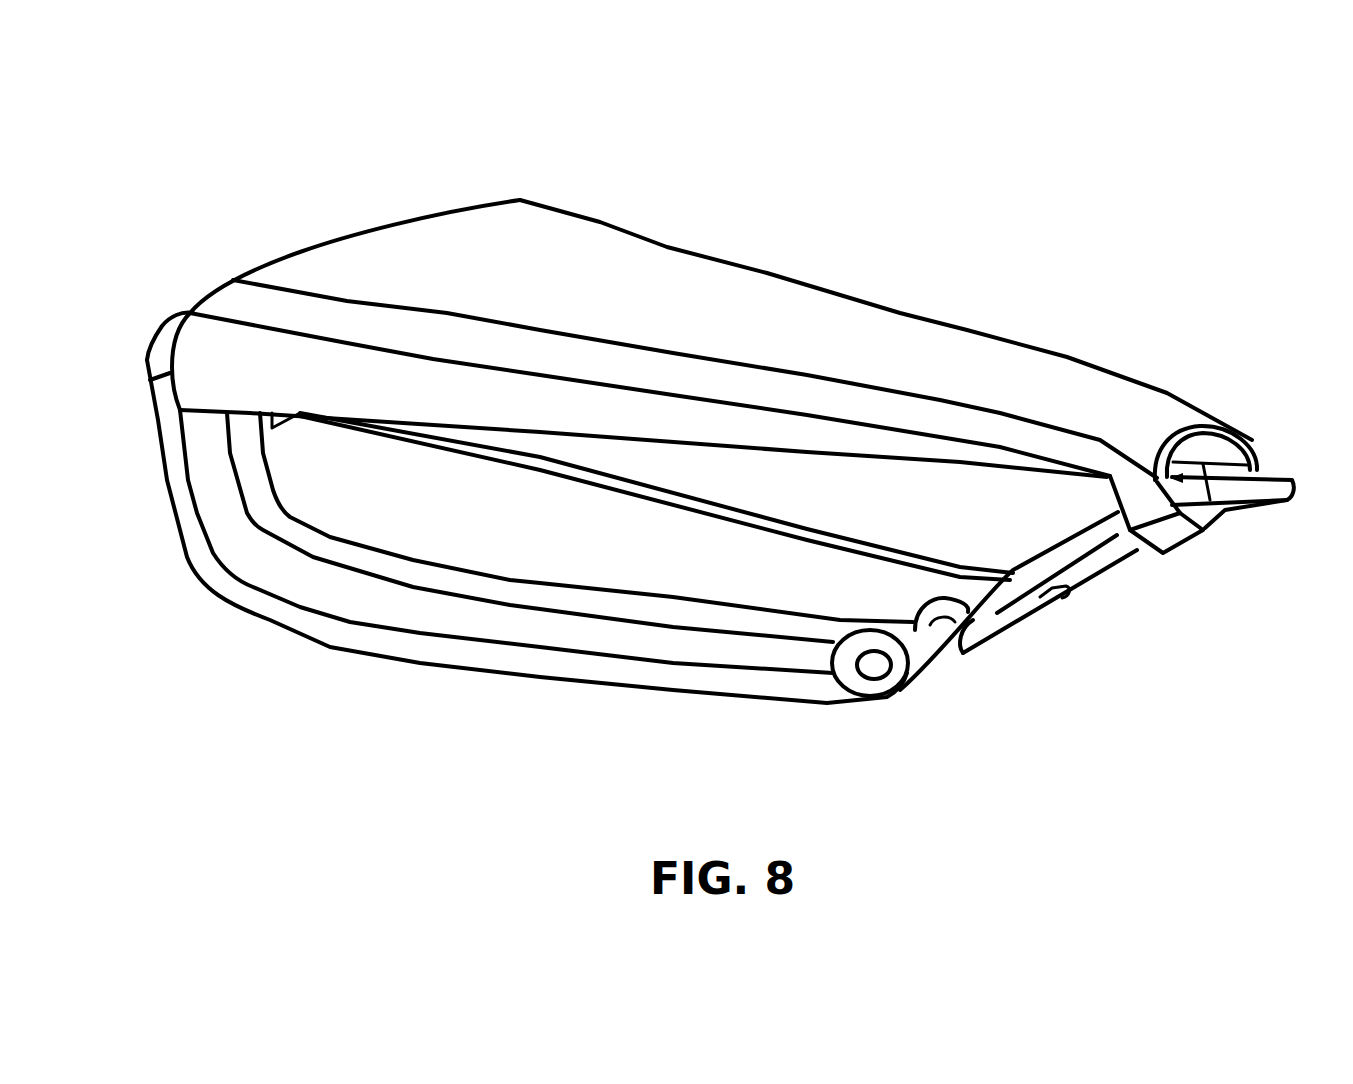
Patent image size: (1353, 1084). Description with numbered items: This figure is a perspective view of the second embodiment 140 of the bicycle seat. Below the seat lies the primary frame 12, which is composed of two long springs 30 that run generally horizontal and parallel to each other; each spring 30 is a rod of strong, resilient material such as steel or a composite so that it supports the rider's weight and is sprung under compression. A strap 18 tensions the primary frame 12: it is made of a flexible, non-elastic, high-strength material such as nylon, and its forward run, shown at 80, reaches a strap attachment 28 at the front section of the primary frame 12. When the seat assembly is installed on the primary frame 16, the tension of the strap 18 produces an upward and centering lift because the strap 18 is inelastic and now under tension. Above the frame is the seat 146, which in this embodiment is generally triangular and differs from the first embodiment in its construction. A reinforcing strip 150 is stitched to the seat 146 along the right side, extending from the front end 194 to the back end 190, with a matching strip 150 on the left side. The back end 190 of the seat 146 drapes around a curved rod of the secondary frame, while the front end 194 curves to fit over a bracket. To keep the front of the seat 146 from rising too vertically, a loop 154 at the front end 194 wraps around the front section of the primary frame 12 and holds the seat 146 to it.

The primary frame 12 is at (336, 646).
The primary frame 16 is at (146, 324).
The strap 18 is at (815, 522).
The strap attachment 28 is at (1032, 654).
The spring 30 is at (455, 568).
The forward extension of the strap 80 is at (648, 500).
The second embodiment of the bicycle seat 140 is at (435, 165).
The seat 146 is at (672, 247).
The reinforcing strip 150 is at (812, 384).
The loop 154 is at (1185, 540).
The back end of the seat 190 is at (288, 246).
The front end of the seat 194 is at (1240, 442).